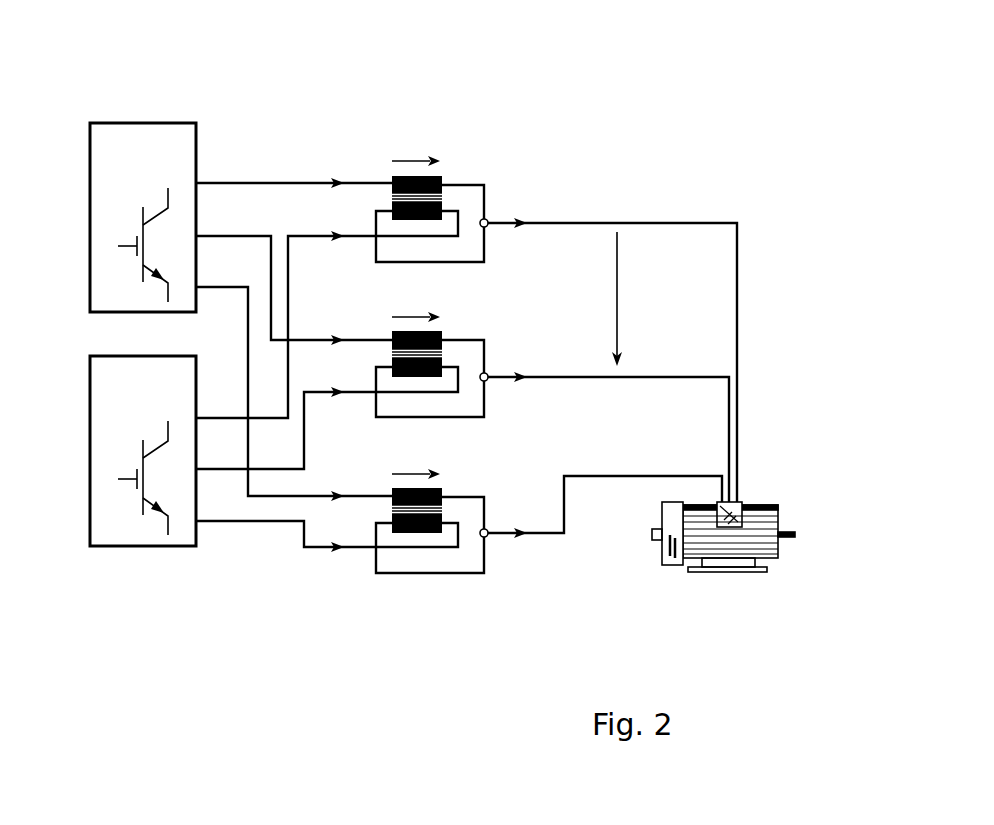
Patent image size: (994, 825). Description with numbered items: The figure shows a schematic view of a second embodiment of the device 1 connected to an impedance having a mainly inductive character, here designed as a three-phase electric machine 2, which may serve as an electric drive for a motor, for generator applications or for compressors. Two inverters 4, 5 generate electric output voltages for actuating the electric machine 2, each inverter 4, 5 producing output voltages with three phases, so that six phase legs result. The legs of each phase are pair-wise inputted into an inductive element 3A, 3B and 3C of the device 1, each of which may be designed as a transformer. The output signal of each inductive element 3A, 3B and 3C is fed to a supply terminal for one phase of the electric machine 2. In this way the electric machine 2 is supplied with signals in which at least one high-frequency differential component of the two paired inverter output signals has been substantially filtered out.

The device 1 is at (466, 296).
The electric machine 2 is at (734, 510).
The inductive element 3A is at (443, 153).
The inductive element 3B is at (467, 331).
The inductive element 3C is at (467, 483).
The inverter 4 is at (112, 145).
The inverter 5 is at (112, 376).